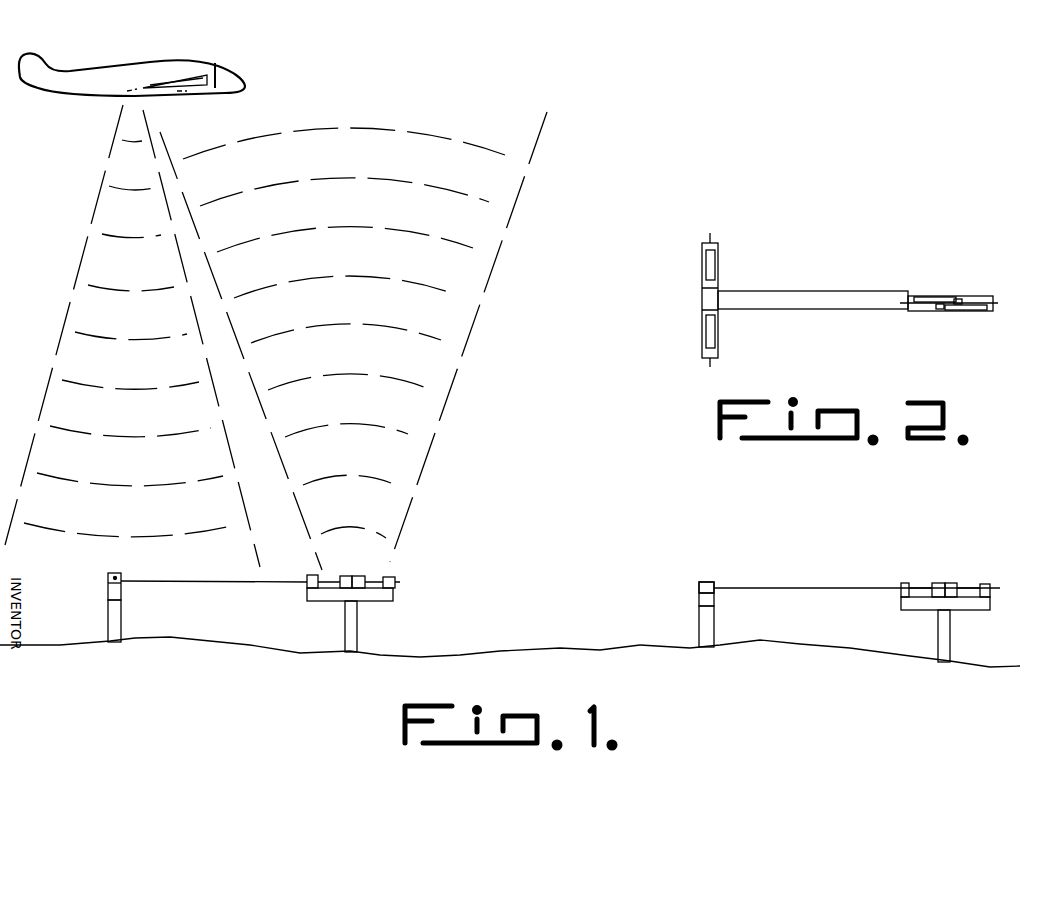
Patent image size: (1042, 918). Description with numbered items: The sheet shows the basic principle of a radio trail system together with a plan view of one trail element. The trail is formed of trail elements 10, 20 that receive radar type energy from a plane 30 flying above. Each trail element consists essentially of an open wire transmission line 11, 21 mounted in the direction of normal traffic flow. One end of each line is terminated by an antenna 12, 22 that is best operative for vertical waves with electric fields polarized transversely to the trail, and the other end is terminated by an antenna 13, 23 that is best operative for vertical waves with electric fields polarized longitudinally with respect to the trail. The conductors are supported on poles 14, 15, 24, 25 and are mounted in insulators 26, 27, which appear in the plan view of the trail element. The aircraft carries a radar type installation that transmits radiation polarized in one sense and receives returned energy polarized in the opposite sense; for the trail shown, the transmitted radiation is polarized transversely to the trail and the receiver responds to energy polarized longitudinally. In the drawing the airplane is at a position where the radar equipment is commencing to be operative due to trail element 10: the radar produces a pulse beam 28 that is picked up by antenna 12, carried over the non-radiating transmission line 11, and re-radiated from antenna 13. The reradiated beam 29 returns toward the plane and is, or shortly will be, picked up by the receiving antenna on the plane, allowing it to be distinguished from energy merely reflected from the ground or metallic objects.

In FIG. 1, the trail element 10 is at (248, 626).
In FIG. 1, the open wire transmission line 11 is at (205, 583).
In FIG. 1, the antenna 12 is at (108, 583).
In FIG. 1, the antenna 13 is at (376, 586).
In FIG. 1, the pole 14 is at (108, 610).
In FIG. 1, the pole 15 is at (357, 627).
In FIG. 1, the trail element 20 is at (843, 637).
In FIG. 1, the open wire transmission line 21 is at (843, 588).
In FIG. 2, the open wire transmission line 21 is at (838, 298).
In FIG. 1, the antenna 22 is at (699, 589).
In FIG. 2, the antenna 22 is at (705, 330).
In FIG. 1, the antenna 23 is at (970, 588).
In FIG. 2, the antenna 23 is at (970, 310).
In FIG. 1, the pole 24 is at (699, 621).
In FIG. 1, the pole 25 is at (950, 629).
In FIG. 1, the insulator 26 is at (705, 583).
In FIG. 2, the insulator 26 is at (718, 318).
In FIG. 1, the insulator 27 is at (988, 585).
In FIG. 2, the insulator 27 is at (913, 311).
In FIG. 1, the pulse beam 28 is at (129, 338).
In FIG. 1, the reradiated beam 29 is at (344, 333).
In FIG. 1, the plane 30 is at (141, 66).